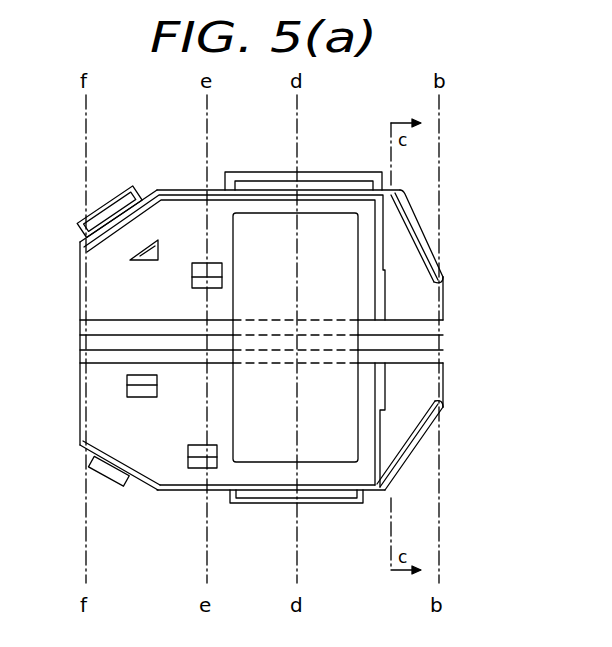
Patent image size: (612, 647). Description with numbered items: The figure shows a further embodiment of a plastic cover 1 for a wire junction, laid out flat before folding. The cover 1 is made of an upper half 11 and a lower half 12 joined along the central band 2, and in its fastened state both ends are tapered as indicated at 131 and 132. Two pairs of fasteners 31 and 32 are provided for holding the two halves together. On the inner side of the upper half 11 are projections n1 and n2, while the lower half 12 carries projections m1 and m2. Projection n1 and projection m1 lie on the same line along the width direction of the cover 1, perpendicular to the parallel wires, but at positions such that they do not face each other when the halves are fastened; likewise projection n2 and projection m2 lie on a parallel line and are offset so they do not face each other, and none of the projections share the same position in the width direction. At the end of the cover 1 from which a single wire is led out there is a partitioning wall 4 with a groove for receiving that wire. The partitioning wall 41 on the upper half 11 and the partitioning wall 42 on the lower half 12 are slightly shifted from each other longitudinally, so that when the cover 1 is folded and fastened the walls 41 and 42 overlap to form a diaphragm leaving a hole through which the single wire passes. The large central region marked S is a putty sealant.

The cover 1 is at (507, 268).
The upper half 11 is at (443, 309).
The lower half 12 is at (433, 383).
The shaft 2 is at (88, 344).
The partitioning wall 4 is at (384, 294).
The partitioning wall 41 is at (381, 258).
The partitioning wall 42 is at (388, 428).
The fasteners 31 is at (124, 192).
The fasteners 32 is at (117, 477).
The tapered end 131 is at (80, 446).
The tapered end 132 is at (440, 252).
The projection n1 is at (205, 263).
The projection n2 is at (147, 241).
The projection m1 is at (203, 469).
The projection m2 is at (148, 398).
The putty sealant S is at (295, 337).